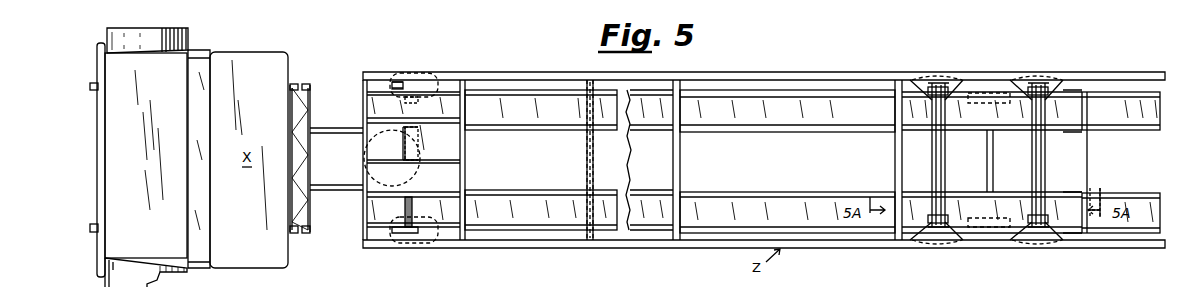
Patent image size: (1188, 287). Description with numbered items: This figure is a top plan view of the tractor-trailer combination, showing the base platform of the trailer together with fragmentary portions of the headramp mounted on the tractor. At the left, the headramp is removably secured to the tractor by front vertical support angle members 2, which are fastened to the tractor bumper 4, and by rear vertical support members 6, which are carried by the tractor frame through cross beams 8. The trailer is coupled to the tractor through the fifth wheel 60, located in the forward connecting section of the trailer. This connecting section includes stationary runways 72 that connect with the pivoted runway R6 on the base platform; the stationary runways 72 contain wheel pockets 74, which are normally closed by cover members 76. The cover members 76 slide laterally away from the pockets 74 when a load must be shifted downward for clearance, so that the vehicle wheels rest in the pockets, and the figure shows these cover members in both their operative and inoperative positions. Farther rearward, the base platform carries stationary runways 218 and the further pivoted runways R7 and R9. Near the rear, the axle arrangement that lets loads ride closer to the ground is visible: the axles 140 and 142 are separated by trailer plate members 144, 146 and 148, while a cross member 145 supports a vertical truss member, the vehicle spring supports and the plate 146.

The front vertical support angle members 2 is at (90, 86).
The tractor bumper 4 is at (97, 162).
The rear vertical support members 6 is at (306, 84).
The cross beams 8 is at (311, 172).
The fifth wheel 60 is at (403, 160).
The stationary runways 72 is at (378, 215).
The wheel pockets 74 is at (440, 235).
The cover members 76 is at (458, 105).
The pivoted runway R6 is at (532, 202).
The stationary runways 218 is at (650, 200).
The pivoted runway R7 is at (775, 205).
The axle 140 is at (932, 167).
The axle 142 is at (1040, 178).
The trailer plate member 144 is at (908, 115).
The cross member 145 is at (987, 168).
The trailer plate member 146 is at (977, 110).
The trailer plate member 148 is at (1073, 112).
The pivoted runway R9 is at (1146, 208).